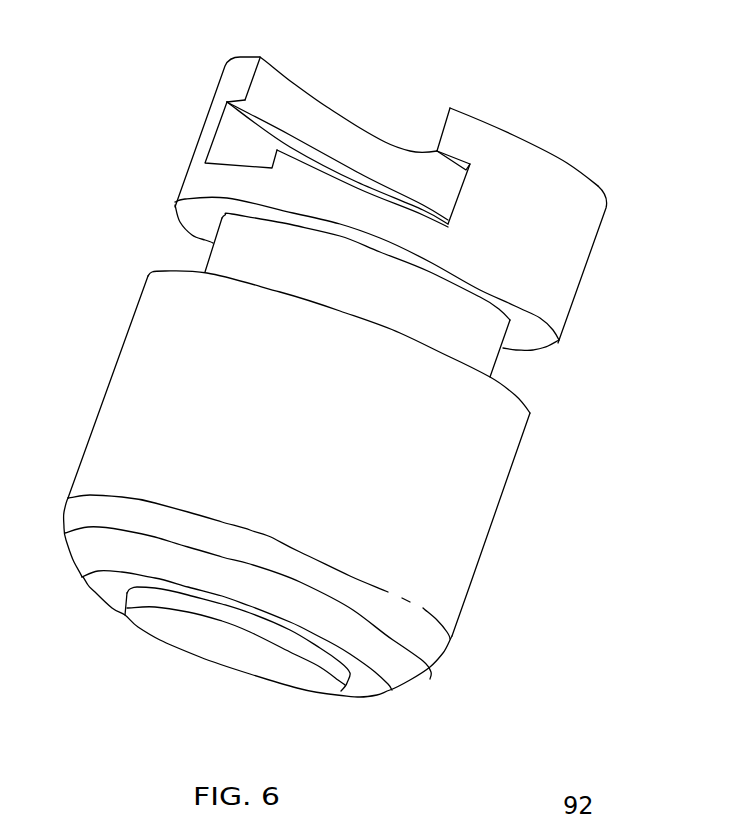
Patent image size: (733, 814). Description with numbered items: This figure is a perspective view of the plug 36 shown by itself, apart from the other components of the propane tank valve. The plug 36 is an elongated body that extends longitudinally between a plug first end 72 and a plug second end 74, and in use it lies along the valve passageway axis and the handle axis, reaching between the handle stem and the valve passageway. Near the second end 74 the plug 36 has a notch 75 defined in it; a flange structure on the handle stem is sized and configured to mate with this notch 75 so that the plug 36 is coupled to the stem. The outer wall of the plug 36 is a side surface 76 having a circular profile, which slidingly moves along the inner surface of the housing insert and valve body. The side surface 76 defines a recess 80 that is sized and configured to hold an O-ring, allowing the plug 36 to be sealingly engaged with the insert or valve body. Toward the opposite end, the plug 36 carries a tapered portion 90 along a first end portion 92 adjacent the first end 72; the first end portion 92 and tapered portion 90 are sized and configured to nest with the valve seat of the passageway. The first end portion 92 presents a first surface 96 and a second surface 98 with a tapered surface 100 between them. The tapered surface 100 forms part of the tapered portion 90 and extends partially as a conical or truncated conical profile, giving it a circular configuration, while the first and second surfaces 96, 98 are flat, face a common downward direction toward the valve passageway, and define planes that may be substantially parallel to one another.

The plug 36 is at (628, 258).
The plug first end 72 is at (297, 680).
The plug second end 74 is at (507, 130).
The notch 75 is at (235, 146).
The side surface 76 is at (490, 533).
The recess 80 is at (537, 341).
The tapered portion 90 is at (104, 607).
The first end portion 92 is at (168, 622).
The first surface 96 is at (370, 687).
The second surface 98 is at (223, 660).
The tapered surface 100 is at (337, 673).